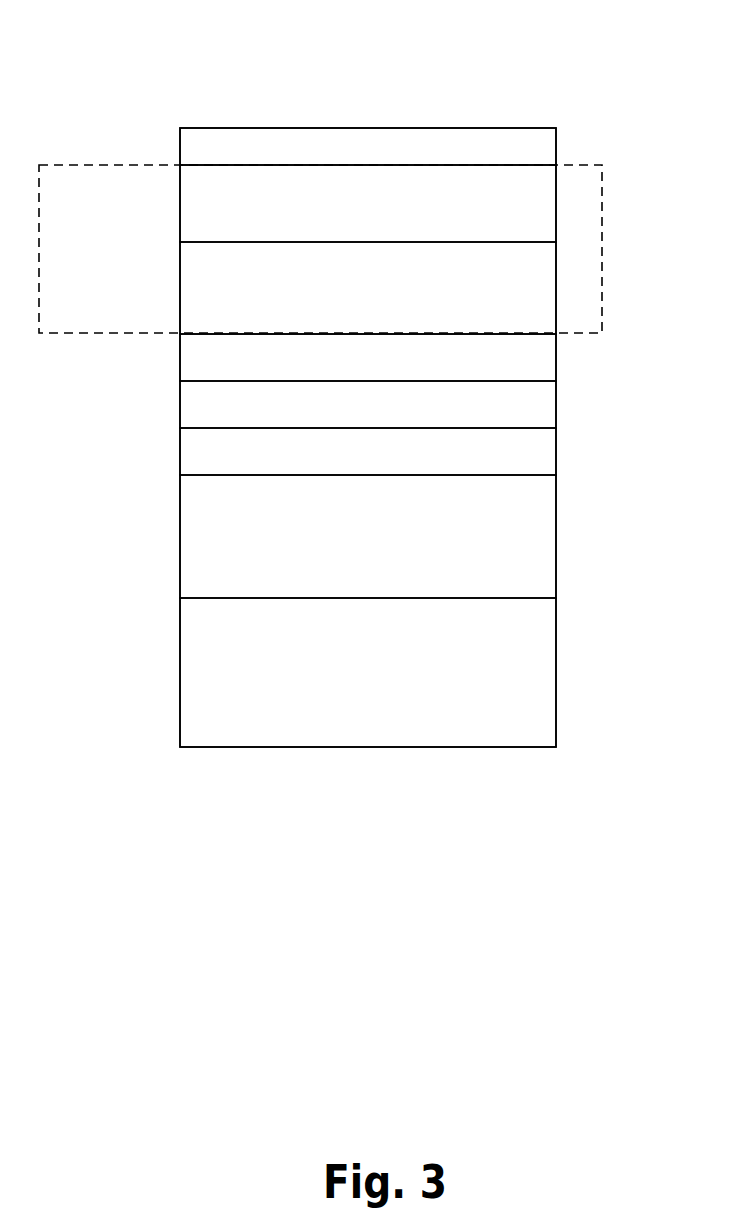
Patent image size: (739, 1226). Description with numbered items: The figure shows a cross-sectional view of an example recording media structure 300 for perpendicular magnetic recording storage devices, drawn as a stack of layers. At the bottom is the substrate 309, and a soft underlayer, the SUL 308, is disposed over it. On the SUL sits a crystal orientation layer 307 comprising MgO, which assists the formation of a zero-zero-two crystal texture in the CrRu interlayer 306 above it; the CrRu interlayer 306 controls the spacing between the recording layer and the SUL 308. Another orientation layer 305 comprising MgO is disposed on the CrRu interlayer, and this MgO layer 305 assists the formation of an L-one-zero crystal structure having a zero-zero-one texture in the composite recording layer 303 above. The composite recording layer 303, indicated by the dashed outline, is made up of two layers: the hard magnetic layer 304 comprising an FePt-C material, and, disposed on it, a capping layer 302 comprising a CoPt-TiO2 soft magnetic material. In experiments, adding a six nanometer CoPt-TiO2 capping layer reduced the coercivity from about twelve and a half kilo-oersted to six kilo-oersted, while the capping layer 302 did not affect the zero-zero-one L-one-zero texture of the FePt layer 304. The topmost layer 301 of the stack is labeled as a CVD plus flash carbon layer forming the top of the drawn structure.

The magnetic recording medium stack 300 is at (412, 63).
The CVD + flash carbon overcoat layer 301 is at (556, 128).
The capping layer 302 is at (180, 203).
The composite recording layer 303 is at (602, 242).
The hard magnetic layer 304 is at (180, 278).
The orientation layer 305 is at (556, 355).
The CrRu interlayer 306 is at (556, 405).
The crystal orientation layer 307 is at (556, 447).
The SUL 308 is at (180, 513).
The substrate 309 is at (180, 653).